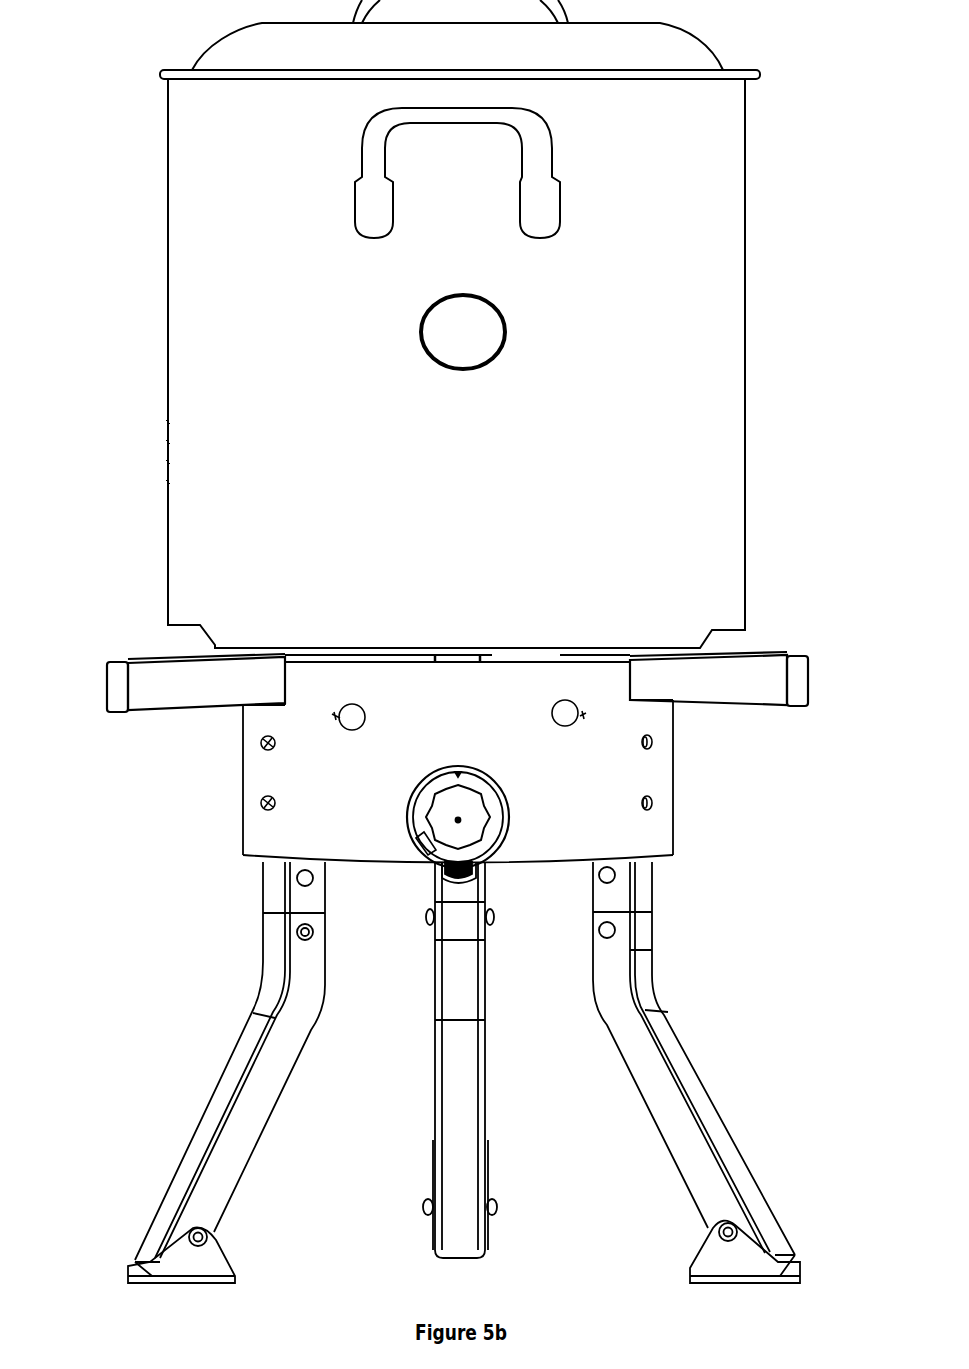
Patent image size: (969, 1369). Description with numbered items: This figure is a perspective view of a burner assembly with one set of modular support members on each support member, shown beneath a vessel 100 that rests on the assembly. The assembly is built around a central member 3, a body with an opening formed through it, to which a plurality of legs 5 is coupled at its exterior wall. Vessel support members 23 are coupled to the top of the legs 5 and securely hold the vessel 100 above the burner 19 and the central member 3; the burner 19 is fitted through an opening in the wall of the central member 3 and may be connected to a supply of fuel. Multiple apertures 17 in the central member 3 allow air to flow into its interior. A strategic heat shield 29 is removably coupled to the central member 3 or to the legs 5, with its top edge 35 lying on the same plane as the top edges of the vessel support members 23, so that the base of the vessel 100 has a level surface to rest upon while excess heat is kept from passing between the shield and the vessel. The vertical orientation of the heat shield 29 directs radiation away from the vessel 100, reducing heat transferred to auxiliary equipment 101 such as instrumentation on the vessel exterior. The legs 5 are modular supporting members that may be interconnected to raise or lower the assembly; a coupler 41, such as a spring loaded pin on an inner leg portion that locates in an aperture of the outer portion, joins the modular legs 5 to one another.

The vessel 100 is at (496, 504).
The auxiliary equipment 101 is at (421, 330).
The vessel support member 23 is at (457, 682).
The top edge 35 is at (517, 664).
The strategic heat shield 29 is at (459, 707).
The apertures 17 is at (343, 722).
The central member 3 is at (559, 867).
The burner 19 is at (262, 748).
The legs 5 is at (464, 1072).
The coupler 41 is at (298, 936).